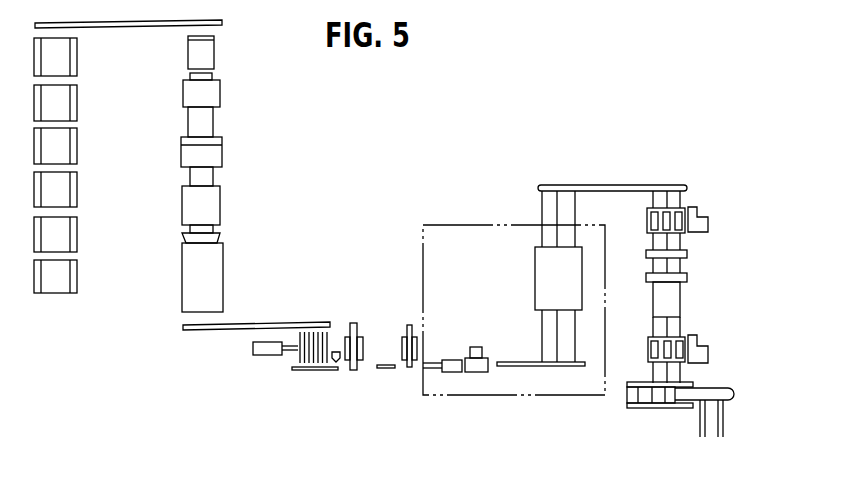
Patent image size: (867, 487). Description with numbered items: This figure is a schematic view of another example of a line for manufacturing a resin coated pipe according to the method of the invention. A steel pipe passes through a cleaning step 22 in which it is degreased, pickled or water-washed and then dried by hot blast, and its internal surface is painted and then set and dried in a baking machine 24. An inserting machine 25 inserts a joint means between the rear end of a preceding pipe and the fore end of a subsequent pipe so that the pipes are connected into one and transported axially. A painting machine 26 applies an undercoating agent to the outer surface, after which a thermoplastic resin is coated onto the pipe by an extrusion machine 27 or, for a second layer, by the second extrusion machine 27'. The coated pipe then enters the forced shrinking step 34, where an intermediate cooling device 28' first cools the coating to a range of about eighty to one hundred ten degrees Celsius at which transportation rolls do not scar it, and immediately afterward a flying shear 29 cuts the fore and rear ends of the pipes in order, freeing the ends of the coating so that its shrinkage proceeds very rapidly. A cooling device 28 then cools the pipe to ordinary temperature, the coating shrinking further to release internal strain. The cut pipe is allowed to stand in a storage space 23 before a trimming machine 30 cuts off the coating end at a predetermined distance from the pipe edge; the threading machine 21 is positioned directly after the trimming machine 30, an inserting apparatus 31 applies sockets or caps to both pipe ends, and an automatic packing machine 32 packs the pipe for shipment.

The threading machine 21 is at (681, 295).
The cleaning step 22 is at (85, 291).
The storage space 23 is at (225, 33).
The baking machine 24 is at (213, 272).
The inserting machine 25 is at (267, 355).
The painting machine 26 is at (337, 352).
The first extrusion machine 27 is at (365, 325).
The second extrusion machine 27' is at (408, 321).
The cooling device 28 is at (531, 278).
The intermediate cooling device 28' is at (447, 332).
The flying shear 29 is at (478, 347).
The trimming machine 30 is at (697, 212).
The inserting apparatus 31 is at (697, 348).
The automatic packing machine 32 is at (655, 408).
The forced shrinking step 34 is at (443, 225).